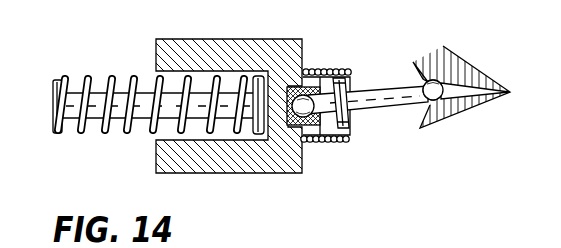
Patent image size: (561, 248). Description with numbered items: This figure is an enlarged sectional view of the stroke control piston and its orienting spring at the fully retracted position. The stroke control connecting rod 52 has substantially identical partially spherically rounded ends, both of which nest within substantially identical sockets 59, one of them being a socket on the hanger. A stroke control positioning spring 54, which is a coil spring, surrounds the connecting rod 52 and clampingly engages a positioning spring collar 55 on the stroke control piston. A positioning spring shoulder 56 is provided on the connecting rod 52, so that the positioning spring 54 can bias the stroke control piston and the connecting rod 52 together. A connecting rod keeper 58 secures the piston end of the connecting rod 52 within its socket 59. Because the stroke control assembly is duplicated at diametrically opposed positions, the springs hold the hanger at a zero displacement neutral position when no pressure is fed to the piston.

The stroke control connecting rod 52 is at (397, 110).
The stroke control positioning spring 54 is at (337, 73).
The positioning spring collar 55 is at (310, 67).
The positioning spring shoulder 56 is at (353, 78).
The connecting rod keeper 58 is at (318, 145).
The socket 59 is at (300, 128).